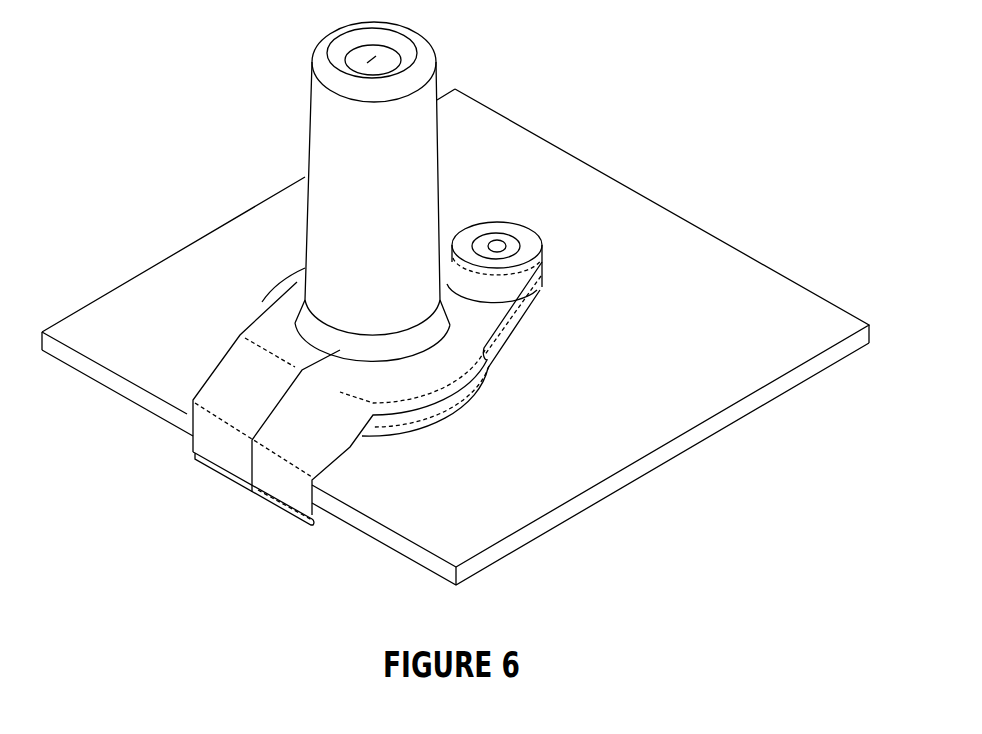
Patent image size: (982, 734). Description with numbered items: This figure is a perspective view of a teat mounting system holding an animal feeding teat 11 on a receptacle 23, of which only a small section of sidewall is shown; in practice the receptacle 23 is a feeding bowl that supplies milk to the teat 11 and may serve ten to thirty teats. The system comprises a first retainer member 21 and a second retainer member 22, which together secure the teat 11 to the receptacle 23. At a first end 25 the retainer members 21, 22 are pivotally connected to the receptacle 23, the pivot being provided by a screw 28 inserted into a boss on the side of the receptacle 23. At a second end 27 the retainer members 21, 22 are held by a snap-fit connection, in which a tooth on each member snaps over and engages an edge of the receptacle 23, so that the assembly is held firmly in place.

The teat 11 is at (308, 119).
The first retainer member 21 is at (505, 338).
The second retainer member 22 is at (268, 296).
The receptacle 23 is at (688, 453).
The first end 25 is at (565, 265).
The second end 27 is at (291, 517).
The screw 28 is at (510, 242).